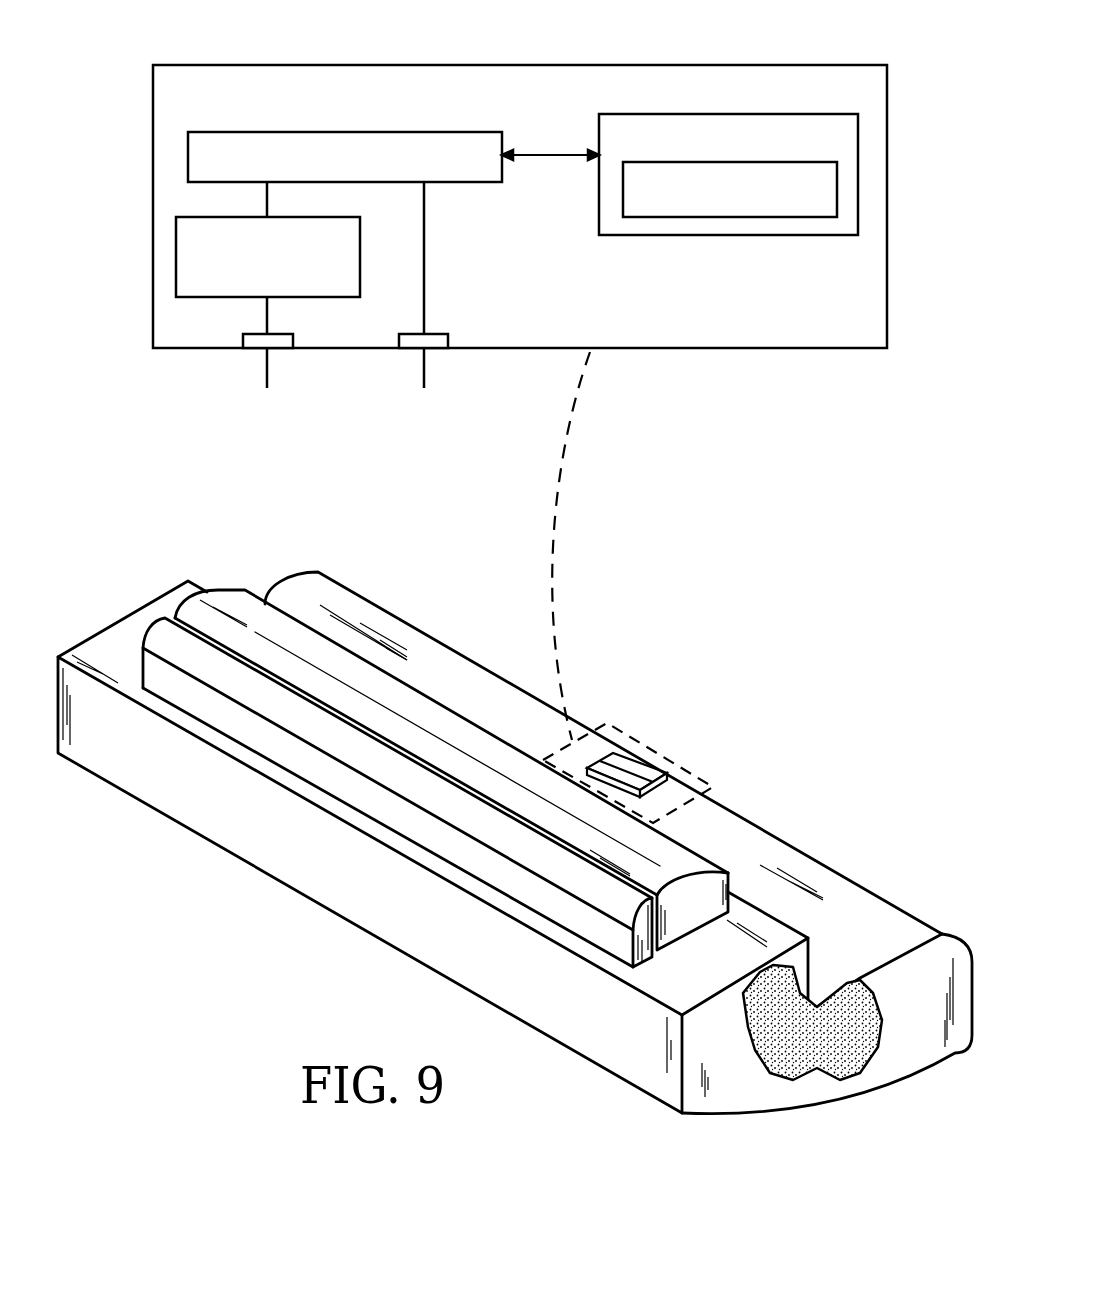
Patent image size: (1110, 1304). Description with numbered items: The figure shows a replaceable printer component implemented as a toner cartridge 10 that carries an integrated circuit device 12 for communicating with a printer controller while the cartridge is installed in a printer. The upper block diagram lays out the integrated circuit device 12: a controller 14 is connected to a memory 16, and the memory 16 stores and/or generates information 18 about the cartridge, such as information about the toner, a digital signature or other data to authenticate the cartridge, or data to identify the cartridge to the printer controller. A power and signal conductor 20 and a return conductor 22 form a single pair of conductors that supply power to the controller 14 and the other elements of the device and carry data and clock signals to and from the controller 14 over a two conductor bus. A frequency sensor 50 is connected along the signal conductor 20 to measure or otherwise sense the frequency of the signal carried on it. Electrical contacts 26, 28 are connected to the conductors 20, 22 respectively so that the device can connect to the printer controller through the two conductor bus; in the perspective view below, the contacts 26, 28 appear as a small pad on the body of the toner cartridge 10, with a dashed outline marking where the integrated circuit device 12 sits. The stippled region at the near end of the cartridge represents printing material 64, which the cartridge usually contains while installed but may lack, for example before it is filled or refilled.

The toner cartridge 10 is at (515, 861).
The integrated circuit device 12 is at (648, 74).
The controller 14 is at (483, 172).
The memory 16 is at (762, 125).
The information 18 is at (750, 172).
The power and signal conductor 20 is at (267, 326).
The return conductor 22 is at (424, 252).
The electrical contact 26 is at (253, 346).
The electrical contact 28 is at (408, 346).
The frequency sensor 50 is at (350, 267).
The printing material 64 is at (800, 1068).